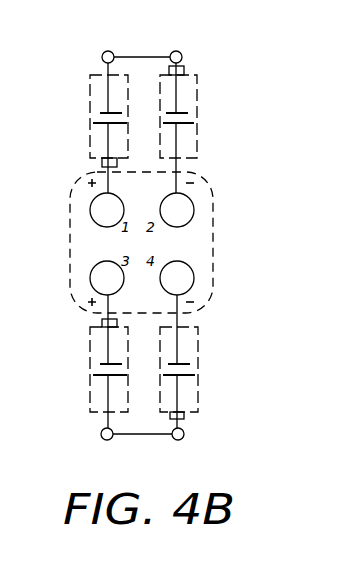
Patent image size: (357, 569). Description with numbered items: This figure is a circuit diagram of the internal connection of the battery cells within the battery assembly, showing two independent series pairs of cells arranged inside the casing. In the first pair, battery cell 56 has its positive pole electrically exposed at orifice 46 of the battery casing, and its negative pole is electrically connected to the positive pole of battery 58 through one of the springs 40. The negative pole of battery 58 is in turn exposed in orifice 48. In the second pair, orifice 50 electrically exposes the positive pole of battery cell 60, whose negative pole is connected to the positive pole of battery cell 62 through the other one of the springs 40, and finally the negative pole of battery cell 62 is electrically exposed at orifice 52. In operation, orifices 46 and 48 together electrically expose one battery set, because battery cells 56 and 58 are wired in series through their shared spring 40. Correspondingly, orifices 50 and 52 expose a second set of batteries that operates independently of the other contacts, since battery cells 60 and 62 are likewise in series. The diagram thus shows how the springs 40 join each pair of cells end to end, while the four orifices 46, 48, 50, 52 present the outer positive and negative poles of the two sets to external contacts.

The springs 40 is at (147, 55).
The orifice 46 is at (90, 207).
The orifice 48 is at (185, 207).
The orifice 50 is at (97, 275).
The orifice 52 is at (185, 282).
The battery cell 56 is at (90, 93).
The battery 58 is at (198, 98).
The battery cell 60 is at (90, 350).
The battery cell 62 is at (200, 392).